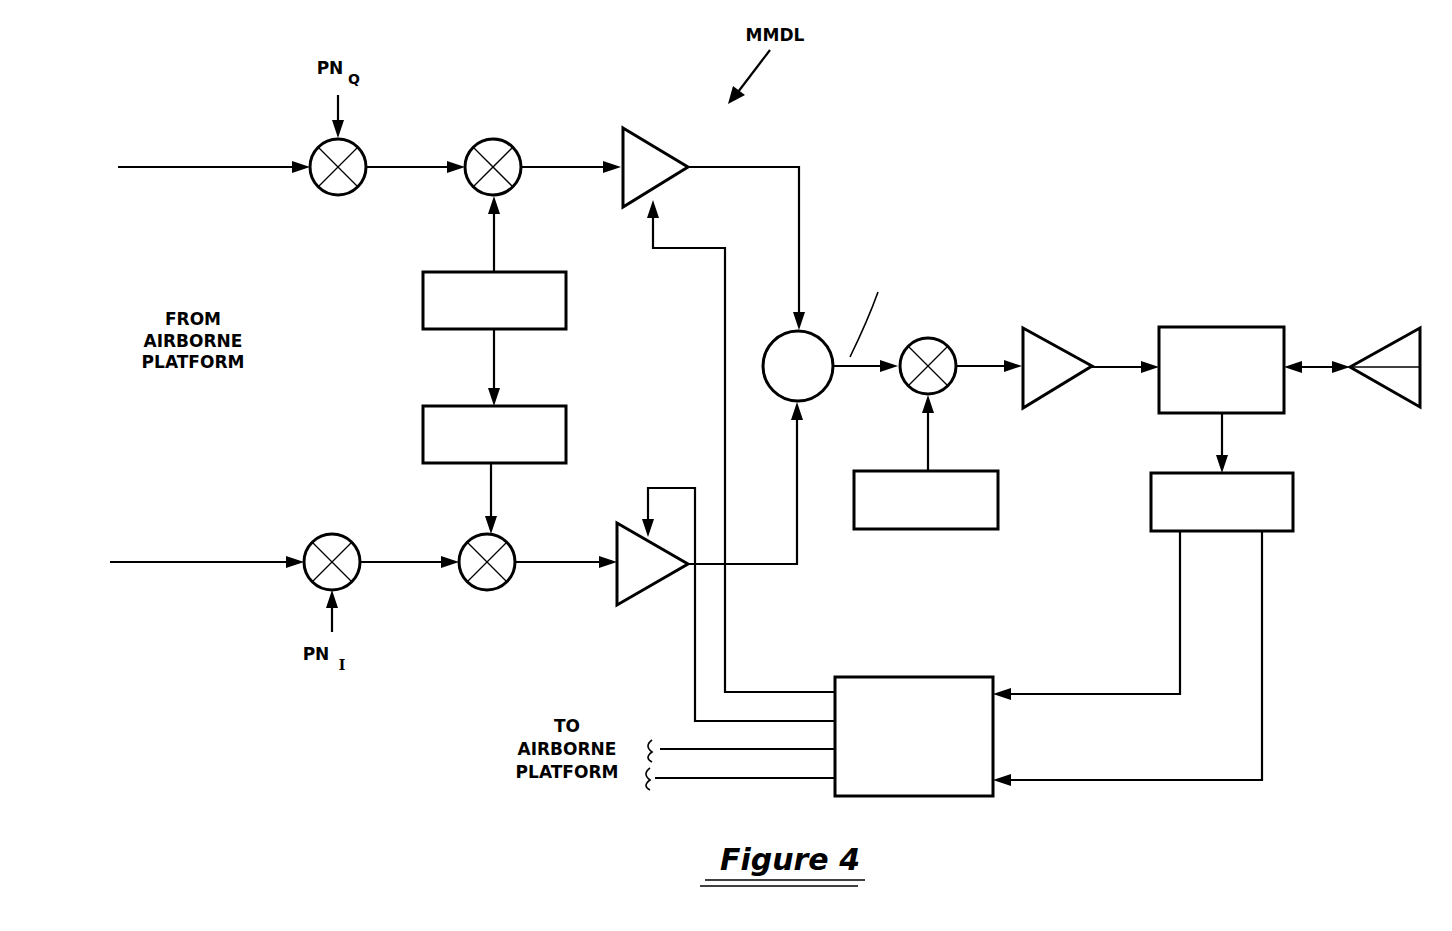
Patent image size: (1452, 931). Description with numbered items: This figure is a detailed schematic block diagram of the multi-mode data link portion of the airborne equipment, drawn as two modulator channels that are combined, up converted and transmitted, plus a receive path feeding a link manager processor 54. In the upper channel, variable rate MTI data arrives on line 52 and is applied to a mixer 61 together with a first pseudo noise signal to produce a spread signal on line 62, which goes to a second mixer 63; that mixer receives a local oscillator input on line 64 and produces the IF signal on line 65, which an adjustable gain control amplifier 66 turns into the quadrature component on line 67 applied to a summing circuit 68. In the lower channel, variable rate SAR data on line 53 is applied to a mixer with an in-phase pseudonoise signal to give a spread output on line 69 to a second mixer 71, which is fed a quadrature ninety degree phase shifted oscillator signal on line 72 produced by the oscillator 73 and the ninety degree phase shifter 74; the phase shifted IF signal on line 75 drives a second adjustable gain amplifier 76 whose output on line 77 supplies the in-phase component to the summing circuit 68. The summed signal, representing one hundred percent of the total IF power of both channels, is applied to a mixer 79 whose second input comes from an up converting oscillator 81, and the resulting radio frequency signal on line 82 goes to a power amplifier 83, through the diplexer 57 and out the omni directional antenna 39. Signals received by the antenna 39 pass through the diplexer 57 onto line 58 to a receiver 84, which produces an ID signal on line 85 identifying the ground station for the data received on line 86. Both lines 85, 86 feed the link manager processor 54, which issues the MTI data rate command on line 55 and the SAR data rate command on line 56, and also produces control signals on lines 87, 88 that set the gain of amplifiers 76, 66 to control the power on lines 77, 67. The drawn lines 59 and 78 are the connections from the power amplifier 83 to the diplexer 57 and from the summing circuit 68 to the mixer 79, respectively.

The omni directional antenna 39 is at (1405, 348).
The variable rate MTI data line 52 is at (275, 162).
The variable rate SAR data line 53 is at (258, 560).
The link manager processor 54 is at (961, 785).
The MTI data rate command line 55 is at (660, 740).
The SAR data rate command line 56 is at (660, 780).
The diplexer 57 is at (1250, 326).
The received signal line 58 is at (1225, 441).
The transmit power amplifier output line 59 is at (1110, 364).
The mixer 61 is at (355, 147).
The spread signal line 62 is at (412, 165).
The second mixer 63 is at (522, 155).
The local oscillator input line 64 is at (500, 242).
The IF signal line 65 is at (573, 164).
The adjustable gain control amplifier 66 is at (662, 150).
The quadrature component line 67 is at (802, 196).
The summing circuit 68 is at (822, 335).
The spread signal output line 69 is at (402, 565).
The second mixer 71 is at (512, 583).
The phase shifted oscillator signal line 72 is at (496, 492).
The oscillator 73 is at (424, 281).
The 90° phase shifter 74 is at (424, 423).
The phase shifted IF signal line 75 is at (568, 567).
The second adjustable gain amplifier 76 is at (645, 590).
The output line 77 is at (799, 546).
The summer output line (100% power) 78 is at (858, 370).
The mixer 79 is at (925, 338).
The up converting oscillator 81 is at (968, 518).
The radio frequency signal line 82 is at (980, 356).
The power amplifier 83 is at (1048, 385).
The receiver 84 is at (1288, 522).
The ID signal line 85 is at (1050, 693).
The received data line 86 is at (1100, 778).
The control signal line 87 is at (672, 485).
The control signal line 88 is at (695, 250).